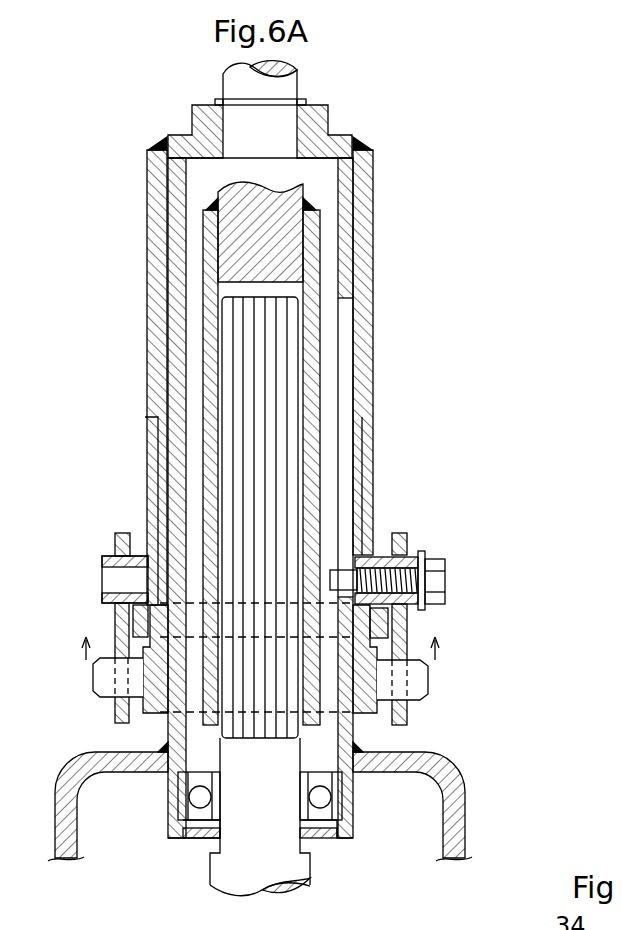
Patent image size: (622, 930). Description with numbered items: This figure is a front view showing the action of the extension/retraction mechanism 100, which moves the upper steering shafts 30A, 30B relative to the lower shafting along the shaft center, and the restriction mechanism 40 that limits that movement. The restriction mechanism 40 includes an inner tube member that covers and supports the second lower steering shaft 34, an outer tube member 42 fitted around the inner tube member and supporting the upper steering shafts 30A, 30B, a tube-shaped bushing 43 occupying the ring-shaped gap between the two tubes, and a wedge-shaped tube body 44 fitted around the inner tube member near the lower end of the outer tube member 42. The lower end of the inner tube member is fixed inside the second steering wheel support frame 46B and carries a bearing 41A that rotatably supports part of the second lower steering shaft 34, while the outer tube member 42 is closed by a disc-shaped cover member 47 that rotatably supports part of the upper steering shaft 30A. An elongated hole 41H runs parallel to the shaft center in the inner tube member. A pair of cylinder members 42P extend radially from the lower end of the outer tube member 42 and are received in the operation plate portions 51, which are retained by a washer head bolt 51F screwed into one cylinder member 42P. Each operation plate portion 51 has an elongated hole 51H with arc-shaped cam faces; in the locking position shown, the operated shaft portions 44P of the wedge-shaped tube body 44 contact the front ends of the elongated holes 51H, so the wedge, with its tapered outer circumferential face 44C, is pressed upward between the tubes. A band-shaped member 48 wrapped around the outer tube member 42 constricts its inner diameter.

The upper steering shaft 30A is at (293, 85).
The disc-shaped cover member 47 is at (178, 135).
The outer tube member 42 is at (147, 247).
The tube-shaped bushing 43 is at (160, 472).
The extension/retraction mechanism 100 is at (413, 412).
The elongated hole 41H is at (346, 356).
The upper steering shaft 30B is at (207, 398).
The second lower steering shaft 34 is at (220, 330).
The operation plate portion 51 is at (119, 533).
The washer head bolt 51F is at (440, 578).
The cylinder member 42P is at (104, 558).
The restriction mechanism 40 is at (505, 628).
The tapered outer circumferential face 44C is at (120, 612).
The band-shaped member 48 is at (400, 617).
The wedge-shaped tube body 44 is at (152, 715).
The operated shaft portion 44P is at (95, 666).
The elongated hole 51H is at (100, 688).
The bearing 41A is at (198, 797).
The second steering wheel support frame 46B is at (465, 818).